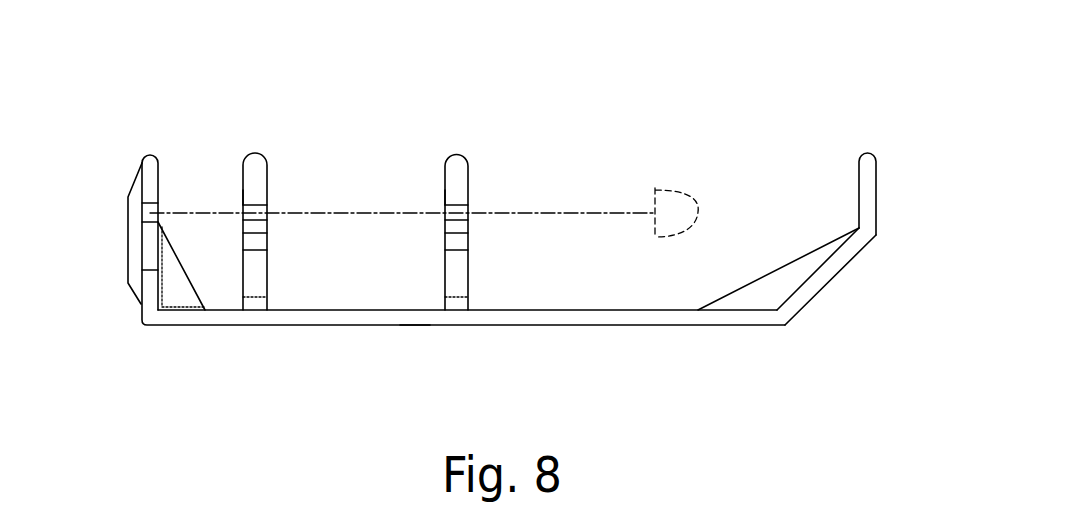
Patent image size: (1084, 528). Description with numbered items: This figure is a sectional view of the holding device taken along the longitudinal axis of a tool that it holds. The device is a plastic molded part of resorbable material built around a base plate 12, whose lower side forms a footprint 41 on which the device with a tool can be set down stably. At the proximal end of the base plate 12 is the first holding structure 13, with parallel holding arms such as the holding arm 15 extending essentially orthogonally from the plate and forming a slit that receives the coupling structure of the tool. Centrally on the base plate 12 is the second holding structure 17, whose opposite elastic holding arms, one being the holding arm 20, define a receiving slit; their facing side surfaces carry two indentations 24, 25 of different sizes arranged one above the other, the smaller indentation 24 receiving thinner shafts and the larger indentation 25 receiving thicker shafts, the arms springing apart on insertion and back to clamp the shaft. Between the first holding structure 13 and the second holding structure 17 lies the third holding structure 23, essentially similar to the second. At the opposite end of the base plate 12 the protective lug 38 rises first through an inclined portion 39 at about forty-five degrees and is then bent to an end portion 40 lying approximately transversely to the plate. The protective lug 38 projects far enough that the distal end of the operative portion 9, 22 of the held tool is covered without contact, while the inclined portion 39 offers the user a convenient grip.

The operative portion 9 is at (674, 177).
The base plate 12 is at (183, 318).
The first holding structure 13 is at (148, 150).
The holding arm 15 is at (134, 195).
The second holding structure 17 is at (457, 143).
The holding arm 20 is at (252, 192).
The operative portion 22 is at (662, 210).
The third holding structure 23 is at (256, 150).
The indentation 24 is at (257, 243).
The indentation 25 is at (258, 212).
The protective lug 38 is at (800, 250).
The inclined portion 39 is at (831, 270).
The end portion 40 is at (865, 192).
The lower side / footprint 41 is at (408, 322).